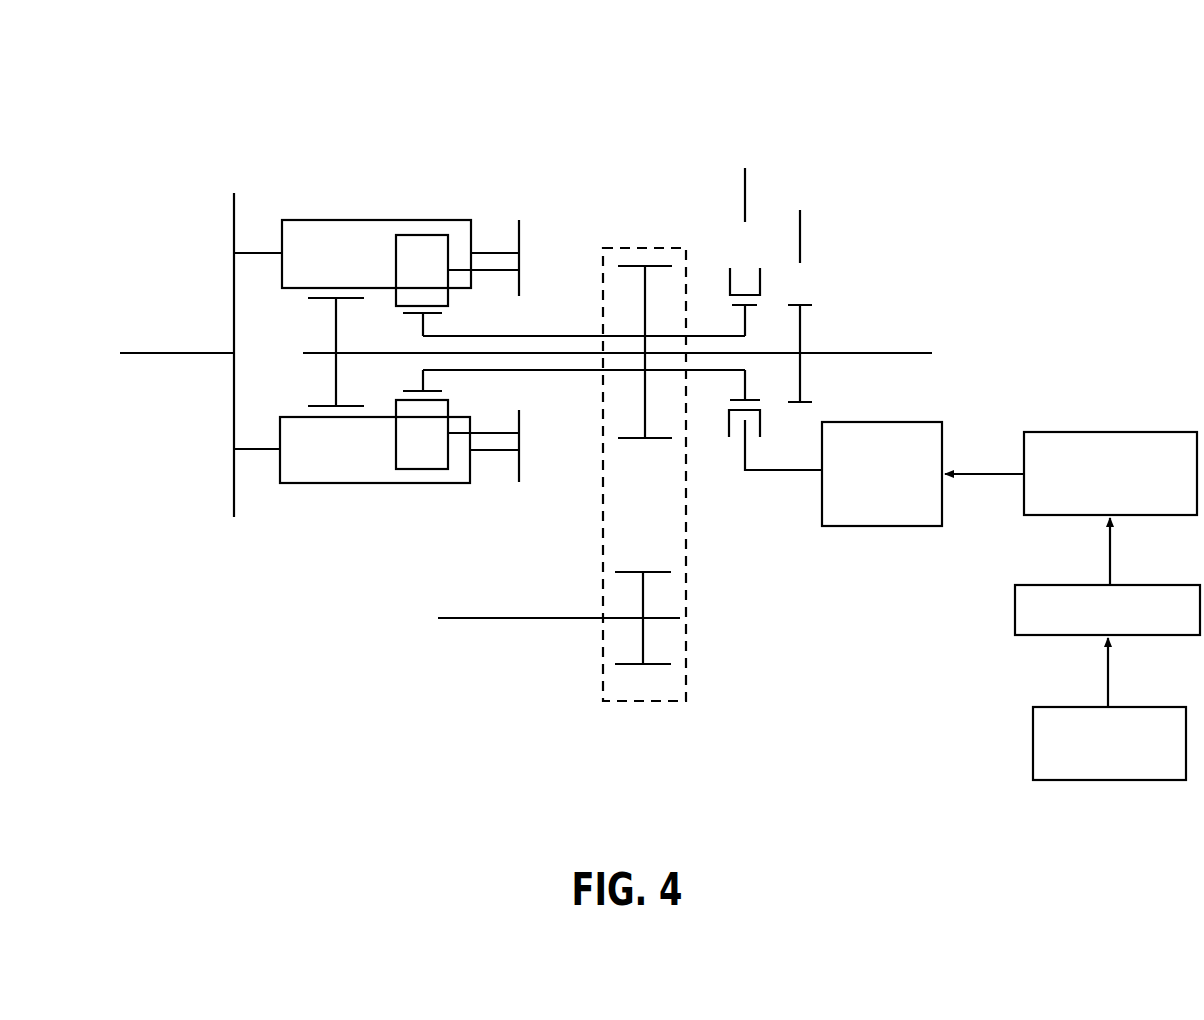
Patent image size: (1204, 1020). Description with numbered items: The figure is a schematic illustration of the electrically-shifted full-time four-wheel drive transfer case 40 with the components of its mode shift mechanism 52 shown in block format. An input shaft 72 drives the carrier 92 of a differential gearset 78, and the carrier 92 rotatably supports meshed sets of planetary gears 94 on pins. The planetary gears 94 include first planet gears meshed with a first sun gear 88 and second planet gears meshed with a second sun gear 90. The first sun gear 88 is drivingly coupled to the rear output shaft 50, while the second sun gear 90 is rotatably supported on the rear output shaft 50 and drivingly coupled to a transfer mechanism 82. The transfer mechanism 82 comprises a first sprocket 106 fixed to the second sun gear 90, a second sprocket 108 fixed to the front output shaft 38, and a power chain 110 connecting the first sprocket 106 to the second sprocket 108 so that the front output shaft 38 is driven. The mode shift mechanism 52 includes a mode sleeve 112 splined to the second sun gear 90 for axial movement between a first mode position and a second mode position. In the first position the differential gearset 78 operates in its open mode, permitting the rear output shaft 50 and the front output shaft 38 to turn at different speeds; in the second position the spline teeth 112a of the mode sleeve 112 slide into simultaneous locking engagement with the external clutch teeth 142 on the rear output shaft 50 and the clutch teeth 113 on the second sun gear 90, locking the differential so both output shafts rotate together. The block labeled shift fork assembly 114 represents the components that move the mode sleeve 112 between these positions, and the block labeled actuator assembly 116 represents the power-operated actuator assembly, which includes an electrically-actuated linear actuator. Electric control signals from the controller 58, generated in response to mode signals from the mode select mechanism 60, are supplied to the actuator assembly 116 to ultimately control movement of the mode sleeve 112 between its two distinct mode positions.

The front output shaft 38 is at (458, 617).
The transfer case 40 is at (580, 104).
The rear output shaft 50 is at (878, 352).
The mode shift mechanism 52 is at (1002, 414).
The controller 58 is at (1015, 613).
The mode select mechanism 60 is at (1033, 742).
The input shaft 72 is at (150, 350).
The differential gearset 78 is at (346, 162).
The transfer mechanism 82 is at (696, 588).
The first sun gear 88 is at (336, 318).
The second sun gear 90 is at (426, 372).
The carrier 92 is at (233, 228).
The planetary gears 94 is at (373, 204).
The first sprocket 106 is at (622, 265).
The second sprocket 108 is at (615, 666).
The power chain 110 is at (617, 537).
The mode sleeve 112 is at (729, 281).
The spline teeth 112a is at (733, 404).
The clutch teeth 113 is at (753, 299).
The shift fork assembly 114 is at (905, 518).
The power-operated actuator assembly 116 is at (1022, 493).
The external clutch teeth 142 is at (805, 404).